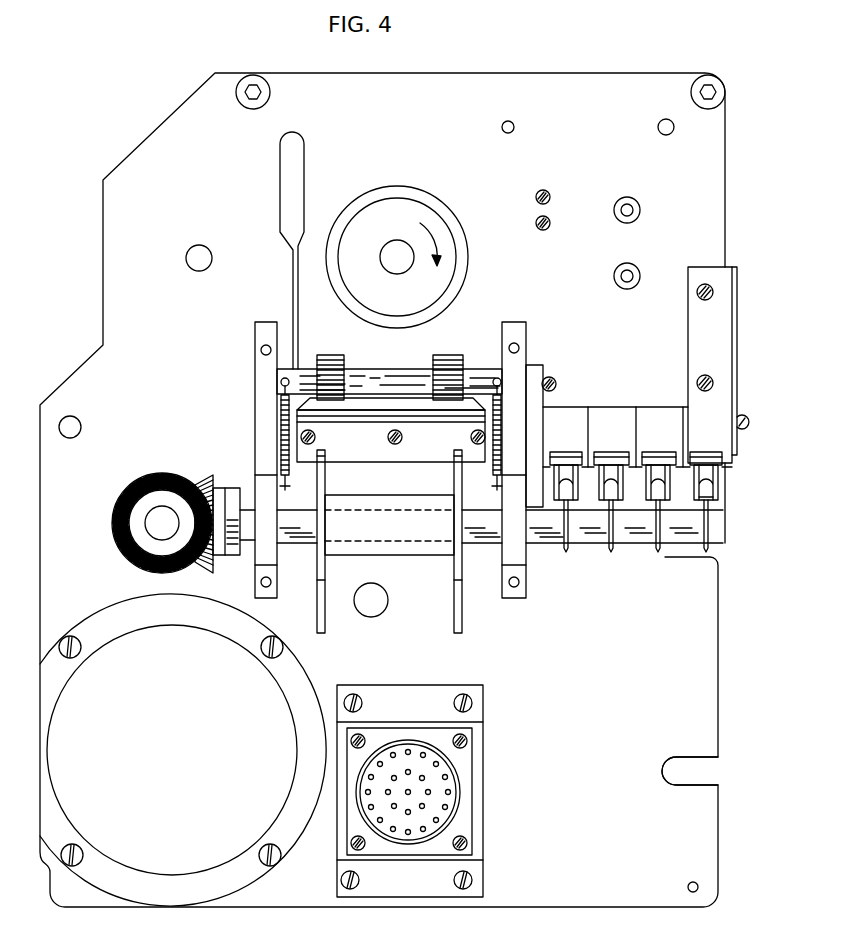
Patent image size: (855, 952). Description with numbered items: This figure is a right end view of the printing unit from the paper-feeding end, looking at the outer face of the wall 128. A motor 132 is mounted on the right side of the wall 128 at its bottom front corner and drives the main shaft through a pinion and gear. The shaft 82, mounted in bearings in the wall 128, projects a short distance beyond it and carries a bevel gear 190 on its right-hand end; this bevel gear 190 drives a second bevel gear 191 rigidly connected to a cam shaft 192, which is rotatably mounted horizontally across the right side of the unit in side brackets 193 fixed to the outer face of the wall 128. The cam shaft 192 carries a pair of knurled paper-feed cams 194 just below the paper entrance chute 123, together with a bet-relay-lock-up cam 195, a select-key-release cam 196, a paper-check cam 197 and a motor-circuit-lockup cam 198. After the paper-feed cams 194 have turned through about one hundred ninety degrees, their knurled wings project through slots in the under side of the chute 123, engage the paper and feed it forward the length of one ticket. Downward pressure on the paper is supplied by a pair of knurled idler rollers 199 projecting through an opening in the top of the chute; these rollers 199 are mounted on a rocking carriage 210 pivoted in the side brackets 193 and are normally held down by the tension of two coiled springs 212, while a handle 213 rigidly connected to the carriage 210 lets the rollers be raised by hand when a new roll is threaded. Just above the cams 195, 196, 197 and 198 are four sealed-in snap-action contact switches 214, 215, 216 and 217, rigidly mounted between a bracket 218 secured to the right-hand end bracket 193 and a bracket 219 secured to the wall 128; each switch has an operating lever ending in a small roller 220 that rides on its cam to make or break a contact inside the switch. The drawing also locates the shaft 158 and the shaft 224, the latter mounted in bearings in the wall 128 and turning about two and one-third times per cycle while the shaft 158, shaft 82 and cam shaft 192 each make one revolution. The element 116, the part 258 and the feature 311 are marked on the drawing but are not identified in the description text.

The shaft 82 is at (162, 523).
The electrical connector 116 is at (466, 758).
The paper entrance chute 123 is at (357, 406).
The wall 128 is at (706, 727).
The motor 132 is at (178, 767).
The shaft 158 is at (387, 607).
The bevel gear 190 is at (146, 567).
The second bevel gear 191 is at (218, 558).
The cam shaft 192 is at (297, 543).
The side brackets 193 is at (258, 352).
The paper-feed cams 194 is at (472, 638).
The bet-relay-lock-up cam 195 is at (566, 553).
The select-key-release cam 196 is at (611, 553).
The paper-check cam 197 is at (658, 553).
The motor-circuit-lockup cam 198 is at (706, 553).
The knurled idler rollers 199 is at (440, 356).
The rocking carriage 210 is at (497, 374).
The coiled springs 212 is at (482, 484).
The handle 213 is at (301, 147).
The contact switch 214 is at (569, 430).
The contact switch 215 is at (612, 430).
The contact switch 216 is at (658, 430).
The contact switch 217 is at (697, 420).
The bracket 218 is at (537, 365).
The bracket 219 is at (700, 342).
The small roller 220 is at (710, 497).
The shaft 224 is at (211, 264).
The cam disc 258 is at (414, 203).
The notch 311 is at (697, 773).